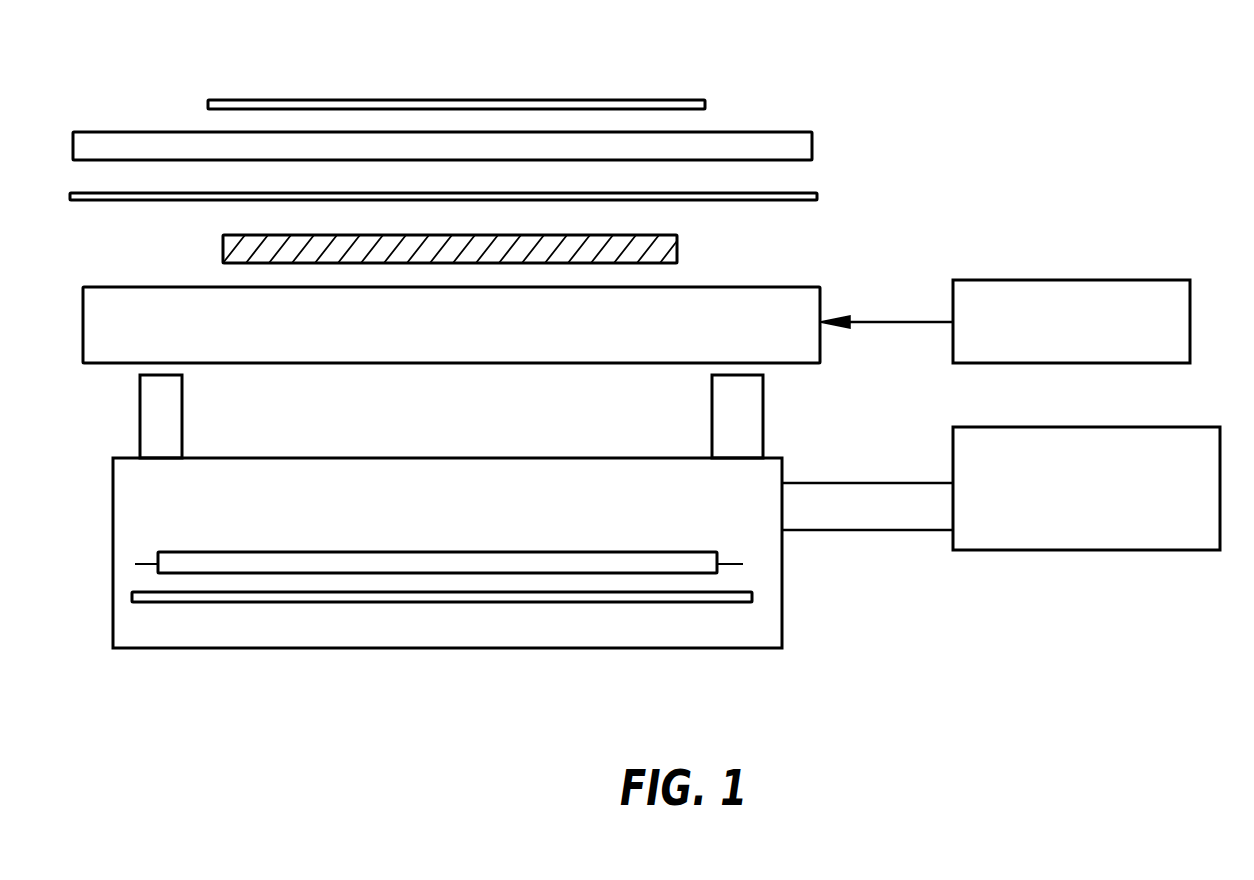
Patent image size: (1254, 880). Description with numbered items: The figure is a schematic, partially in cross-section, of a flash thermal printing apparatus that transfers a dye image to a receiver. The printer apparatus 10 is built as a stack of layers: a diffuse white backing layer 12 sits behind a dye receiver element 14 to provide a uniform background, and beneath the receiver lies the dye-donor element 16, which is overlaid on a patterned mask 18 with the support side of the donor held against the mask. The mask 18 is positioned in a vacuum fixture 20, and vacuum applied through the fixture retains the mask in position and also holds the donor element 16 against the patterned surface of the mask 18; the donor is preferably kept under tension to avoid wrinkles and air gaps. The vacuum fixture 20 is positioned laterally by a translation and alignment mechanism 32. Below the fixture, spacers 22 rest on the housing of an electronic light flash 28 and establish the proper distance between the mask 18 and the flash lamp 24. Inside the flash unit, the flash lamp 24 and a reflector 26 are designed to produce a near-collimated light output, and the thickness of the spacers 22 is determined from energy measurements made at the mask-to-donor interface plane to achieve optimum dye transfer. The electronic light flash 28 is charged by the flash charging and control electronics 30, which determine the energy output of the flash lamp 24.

The printer apparatus 10 is at (470, 34).
The white backing layer 12 is at (623, 100).
The dye receiver element 14 is at (780, 136).
The dye-donor element 16 is at (817, 196).
The mask 18 is at (677, 245).
The vacuum fixture 20 is at (820, 347).
The spacers 22 is at (165, 409).
The flash lamp 24 is at (603, 555).
The reflector 26 is at (695, 602).
The electronic light flash 28 is at (518, 648).
The flash charging and control electronics 30 is at (1048, 550).
The translation and alignment mechanism 32 is at (1052, 280).